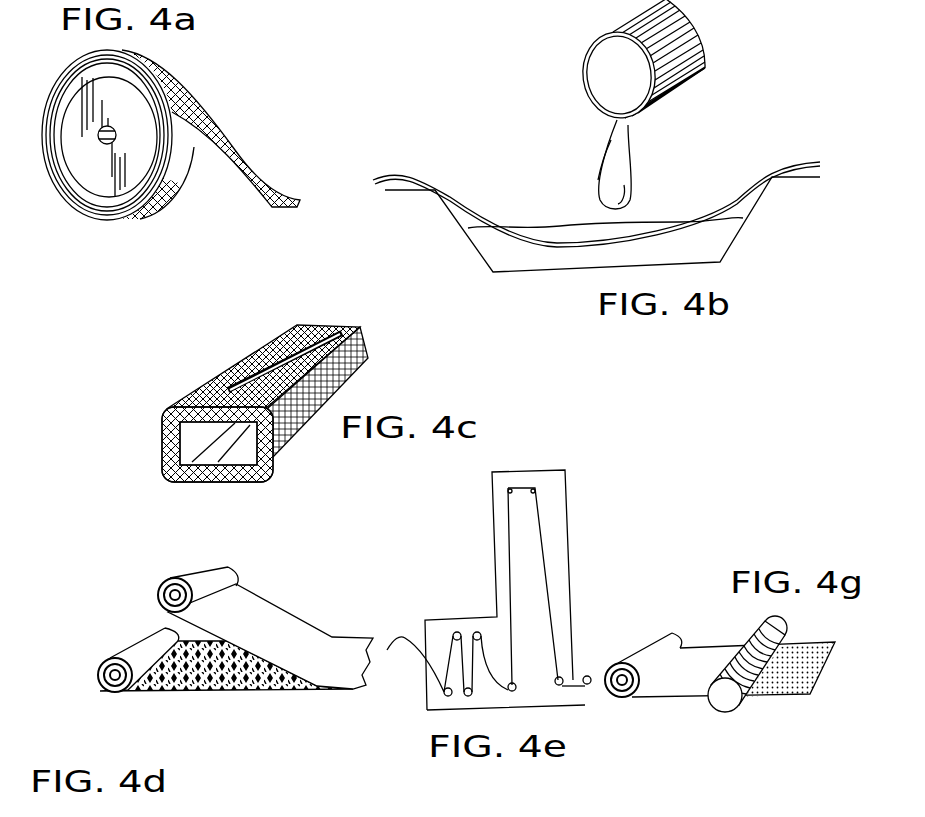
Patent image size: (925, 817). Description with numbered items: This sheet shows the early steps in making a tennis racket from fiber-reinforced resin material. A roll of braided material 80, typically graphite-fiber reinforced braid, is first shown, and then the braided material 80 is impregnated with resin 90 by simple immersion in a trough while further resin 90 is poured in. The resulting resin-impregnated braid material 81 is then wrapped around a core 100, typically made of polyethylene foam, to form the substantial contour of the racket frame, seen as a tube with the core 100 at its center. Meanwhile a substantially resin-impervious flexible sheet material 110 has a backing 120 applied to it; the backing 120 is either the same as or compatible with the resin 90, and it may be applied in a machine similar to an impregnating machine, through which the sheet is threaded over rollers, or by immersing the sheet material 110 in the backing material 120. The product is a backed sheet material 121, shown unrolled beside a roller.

In FIG. 4A, the braided material 80 is at (212, 113).
In FIG. 4B, the braided material 80 is at (550, 240).
In FIG. 4B, the resin 90 is at (505, 237).
In FIG. 4C, the resin-impregnated braid material 81 is at (238, 366).
In FIG. 4C, the core 100 is at (206, 468).
In FIG. 4D, the resin-impervious flexible sheet material 110 is at (175, 690).
In FIG. 4D, the backing 120 is at (265, 615).
In FIG. 4G, the backed sheet material 121 is at (703, 653).